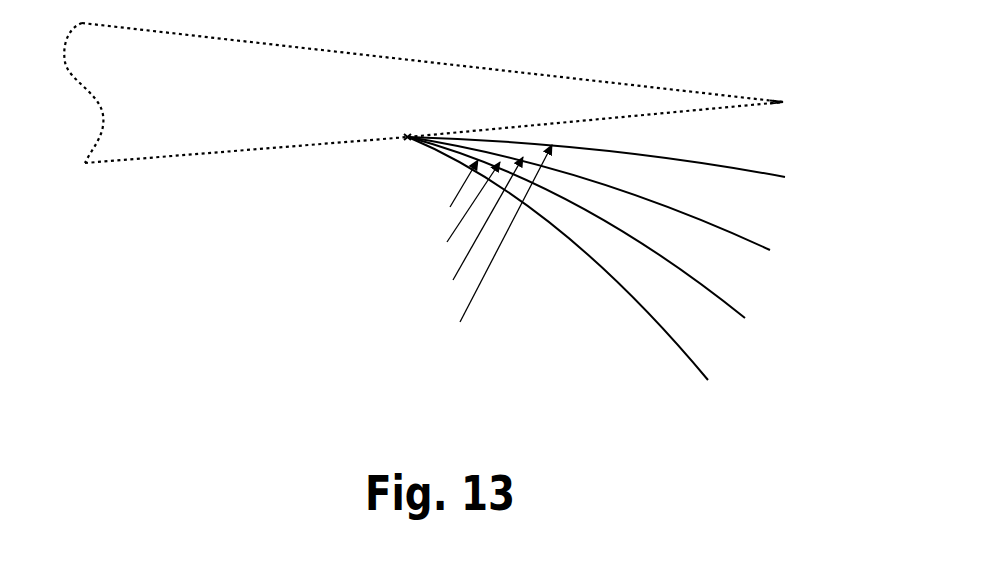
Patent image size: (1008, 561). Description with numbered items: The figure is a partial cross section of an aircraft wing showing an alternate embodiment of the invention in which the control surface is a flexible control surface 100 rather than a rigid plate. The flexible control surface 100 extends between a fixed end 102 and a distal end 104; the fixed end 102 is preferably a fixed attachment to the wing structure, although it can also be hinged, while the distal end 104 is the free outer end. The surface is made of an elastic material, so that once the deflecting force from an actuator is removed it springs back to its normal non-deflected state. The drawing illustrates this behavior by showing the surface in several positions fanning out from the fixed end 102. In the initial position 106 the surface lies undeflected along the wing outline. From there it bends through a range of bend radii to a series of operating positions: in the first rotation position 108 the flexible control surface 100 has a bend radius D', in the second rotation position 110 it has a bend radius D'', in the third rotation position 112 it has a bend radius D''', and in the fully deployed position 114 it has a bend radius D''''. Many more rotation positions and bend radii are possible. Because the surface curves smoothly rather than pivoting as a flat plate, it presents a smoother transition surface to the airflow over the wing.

The flexible control surface 100 is at (603, 117).
The fixed end 102 is at (404, 142).
The distal end 104 is at (783, 102).
The initial position 106 is at (755, 107).
The first rotation position 108 is at (785, 177).
The second rotation position 110 is at (770, 250).
The third rotation position 112 is at (745, 318).
The deployed position 114 is at (708, 380).
The bend radius D' is at (498, 248).
The bend radius D'' is at (475, 235).
The bend radius D''' is at (456, 216).
The bend radius D'''' is at (441, 195).